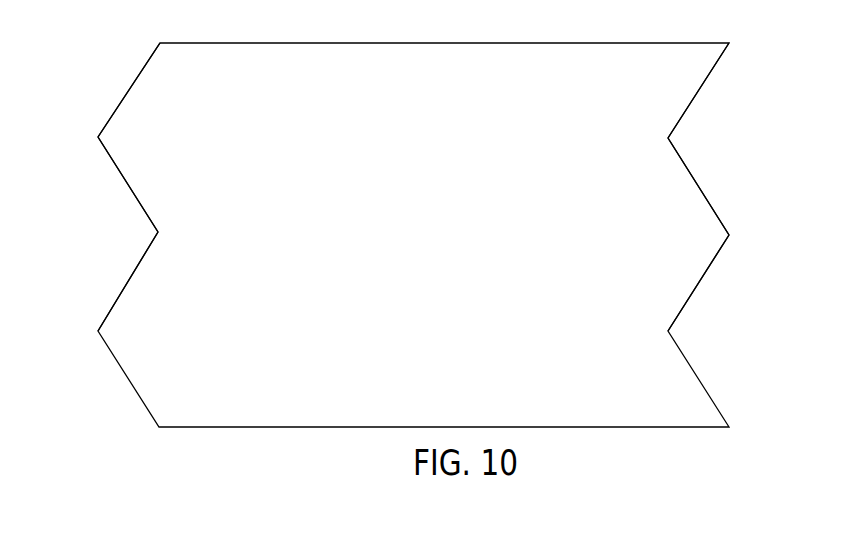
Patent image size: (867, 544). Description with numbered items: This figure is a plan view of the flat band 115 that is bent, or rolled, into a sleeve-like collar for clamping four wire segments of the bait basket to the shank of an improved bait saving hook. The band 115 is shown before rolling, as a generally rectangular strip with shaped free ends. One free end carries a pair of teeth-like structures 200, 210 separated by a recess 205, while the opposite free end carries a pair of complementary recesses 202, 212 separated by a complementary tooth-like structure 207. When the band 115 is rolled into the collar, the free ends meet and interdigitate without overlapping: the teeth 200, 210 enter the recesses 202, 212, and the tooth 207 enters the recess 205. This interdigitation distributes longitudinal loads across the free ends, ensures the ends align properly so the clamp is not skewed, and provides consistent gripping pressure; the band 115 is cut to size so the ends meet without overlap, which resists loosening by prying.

The collar 115 is at (422, 62).
The tooth-like structure 200 is at (95, 138).
The recess 202 is at (670, 140).
The recess 205 is at (155, 232).
The tooth-like structure 207 is at (730, 235).
The tooth-like structure 210 is at (96, 331).
The recess 212 is at (670, 332).